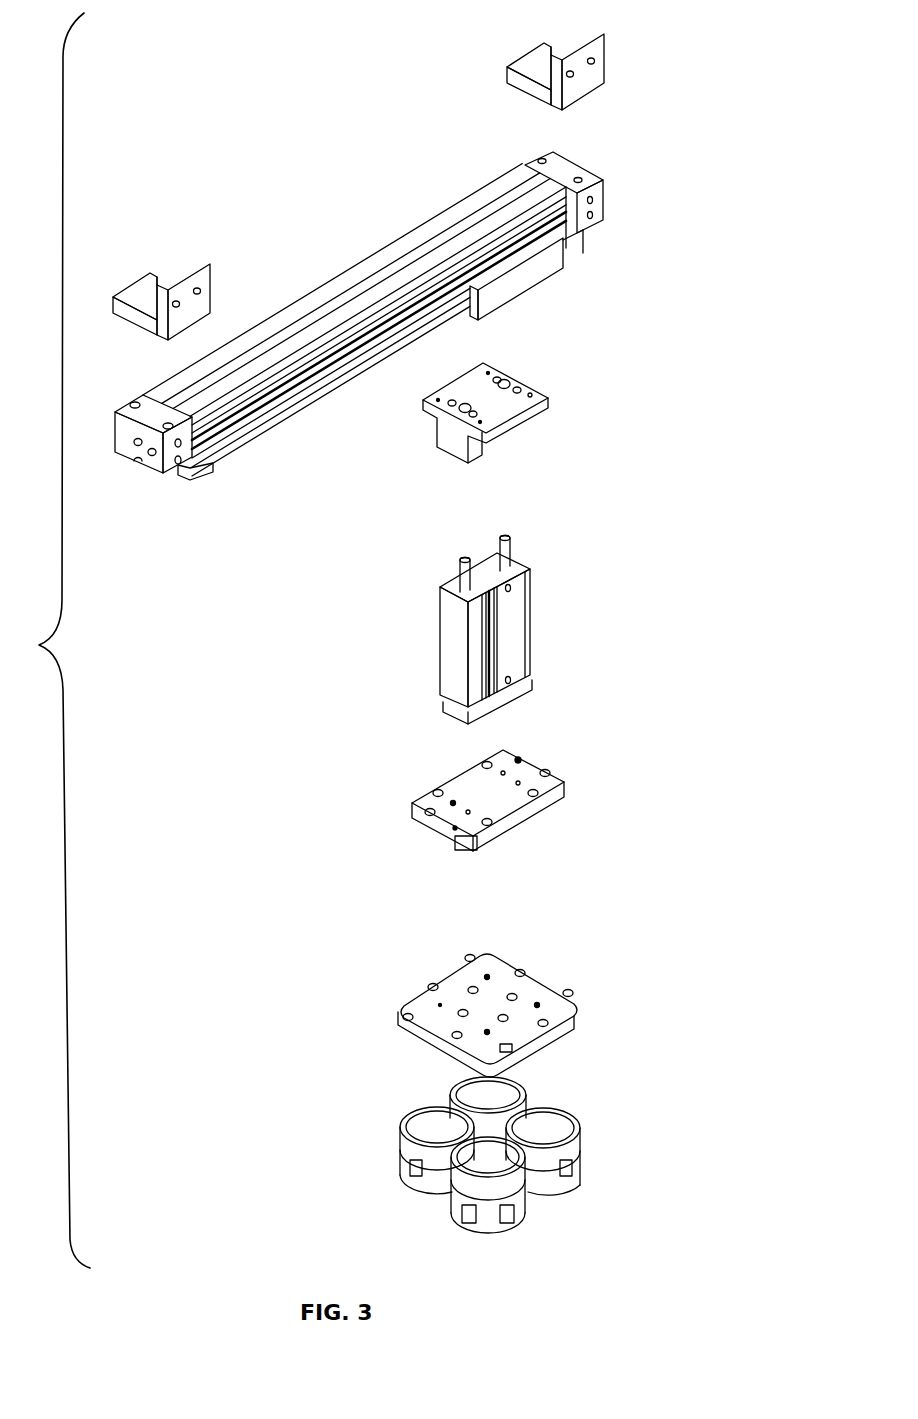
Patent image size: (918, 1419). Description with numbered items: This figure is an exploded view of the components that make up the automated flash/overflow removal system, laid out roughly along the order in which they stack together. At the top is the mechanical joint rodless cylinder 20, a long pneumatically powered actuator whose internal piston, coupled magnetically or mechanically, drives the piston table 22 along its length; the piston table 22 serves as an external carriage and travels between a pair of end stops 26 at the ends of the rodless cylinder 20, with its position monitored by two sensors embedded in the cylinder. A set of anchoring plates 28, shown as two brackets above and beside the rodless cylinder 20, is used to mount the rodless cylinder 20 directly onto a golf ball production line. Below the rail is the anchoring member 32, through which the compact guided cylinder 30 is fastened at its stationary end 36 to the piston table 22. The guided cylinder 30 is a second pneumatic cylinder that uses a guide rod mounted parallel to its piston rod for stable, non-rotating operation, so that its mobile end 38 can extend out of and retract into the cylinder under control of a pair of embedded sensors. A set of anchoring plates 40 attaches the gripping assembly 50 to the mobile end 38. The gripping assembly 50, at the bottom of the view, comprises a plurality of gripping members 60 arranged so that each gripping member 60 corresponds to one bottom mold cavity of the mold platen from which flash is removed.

The mechanical joint rodless cylinder 20 is at (377, 268).
The piston table 22 is at (515, 282).
The end stops 26 is at (197, 473).
The anchoring plates 28 is at (508, 68).
The compact guided cylinder 30 is at (471, 630).
The anchoring member 32 is at (507, 412).
The stationary end 36 is at (498, 572).
The mobile end 38 is at (510, 693).
The anchoring plates 40 is at (498, 808).
The gripping assembly 50 is at (481, 1131).
The gripping members 60 is at (440, 1127).